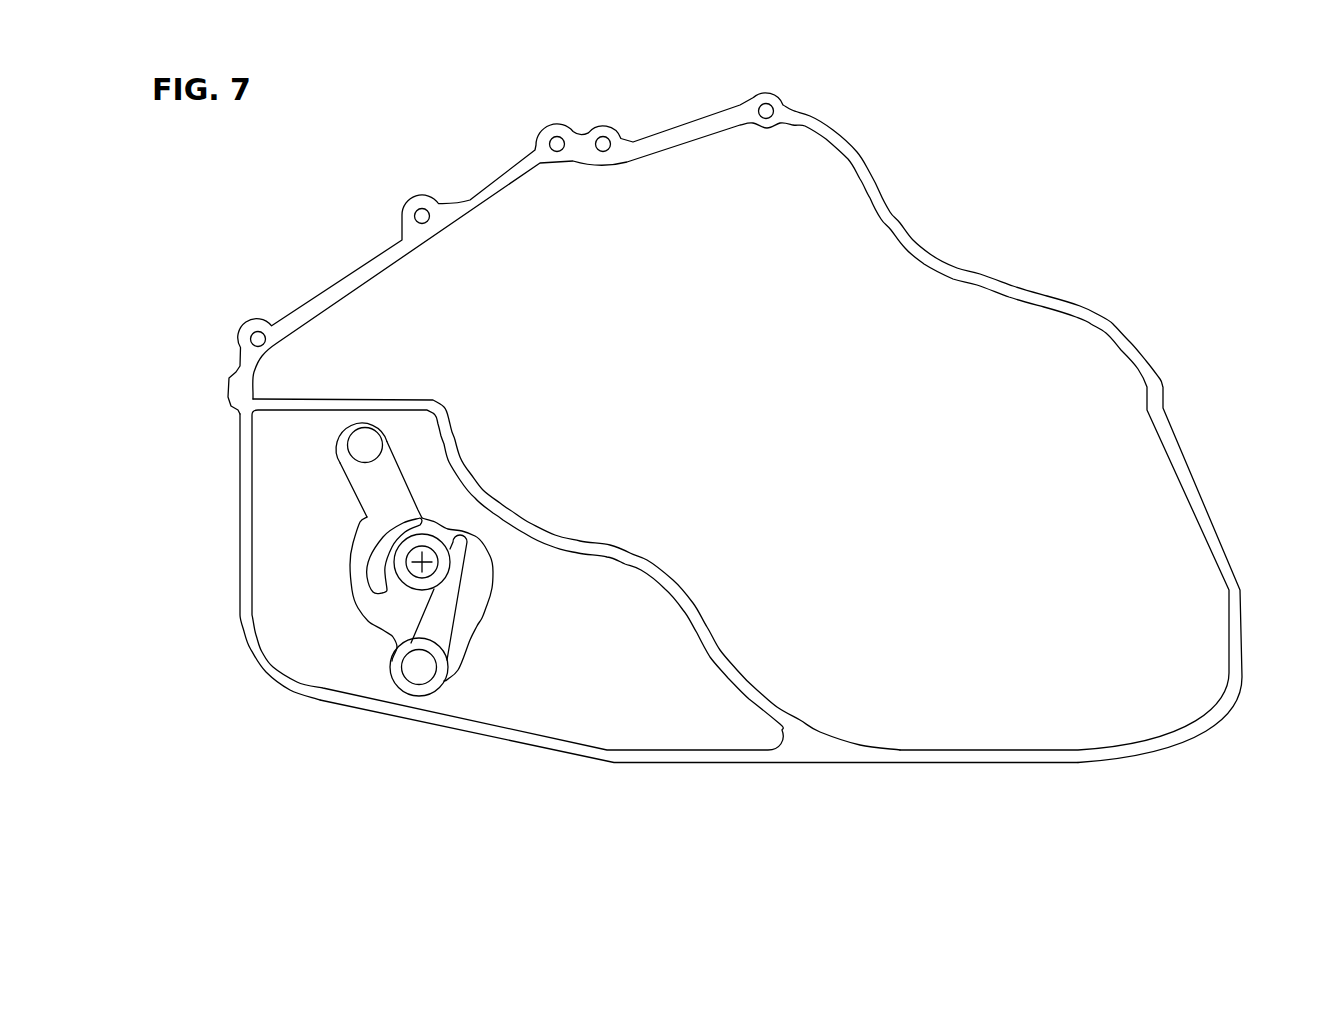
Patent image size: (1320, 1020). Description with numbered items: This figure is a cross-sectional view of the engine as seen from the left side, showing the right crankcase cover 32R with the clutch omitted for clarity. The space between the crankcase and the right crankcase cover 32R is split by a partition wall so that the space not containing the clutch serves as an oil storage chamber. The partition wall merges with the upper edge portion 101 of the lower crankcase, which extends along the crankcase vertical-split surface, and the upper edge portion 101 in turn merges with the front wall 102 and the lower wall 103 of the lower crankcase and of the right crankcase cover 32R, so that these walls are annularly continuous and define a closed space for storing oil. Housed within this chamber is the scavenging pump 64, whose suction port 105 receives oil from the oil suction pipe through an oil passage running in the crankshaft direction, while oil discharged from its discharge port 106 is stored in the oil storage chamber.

The right crankcase cover 32R is at (894, 175).
The upper edge portion 101 is at (338, 407).
The front wall 102 is at (242, 577).
The lower wall 103 is at (615, 754).
The suction port 105 is at (417, 670).
The discharge port 106 is at (368, 440).
The scavenging pump 64 is at (442, 588).